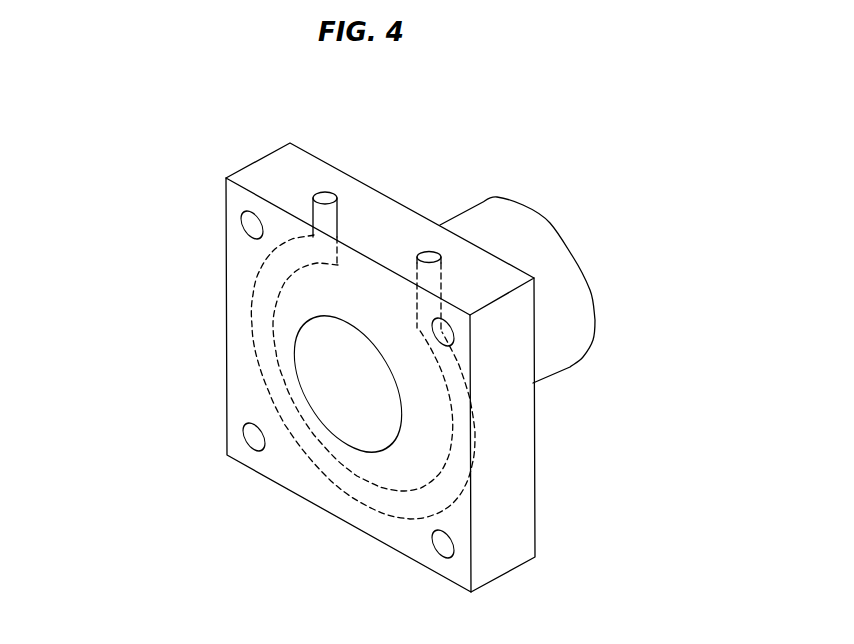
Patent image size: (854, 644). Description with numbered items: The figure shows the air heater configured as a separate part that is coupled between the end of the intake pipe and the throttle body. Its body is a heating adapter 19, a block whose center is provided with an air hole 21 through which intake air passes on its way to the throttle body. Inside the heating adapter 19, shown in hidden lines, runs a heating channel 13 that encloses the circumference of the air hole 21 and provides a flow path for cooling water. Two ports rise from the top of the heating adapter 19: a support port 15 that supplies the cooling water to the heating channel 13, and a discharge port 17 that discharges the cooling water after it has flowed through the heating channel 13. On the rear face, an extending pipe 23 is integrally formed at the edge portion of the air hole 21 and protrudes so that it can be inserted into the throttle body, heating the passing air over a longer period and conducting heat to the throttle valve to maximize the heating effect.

The heating adapter 19 is at (216, 229).
The heating channel 13 is at (257, 333).
The support port 15 is at (428, 252).
The discharge port 17 is at (325, 196).
The air hole 21 is at (340, 383).
The extending pipe 23 is at (553, 358).